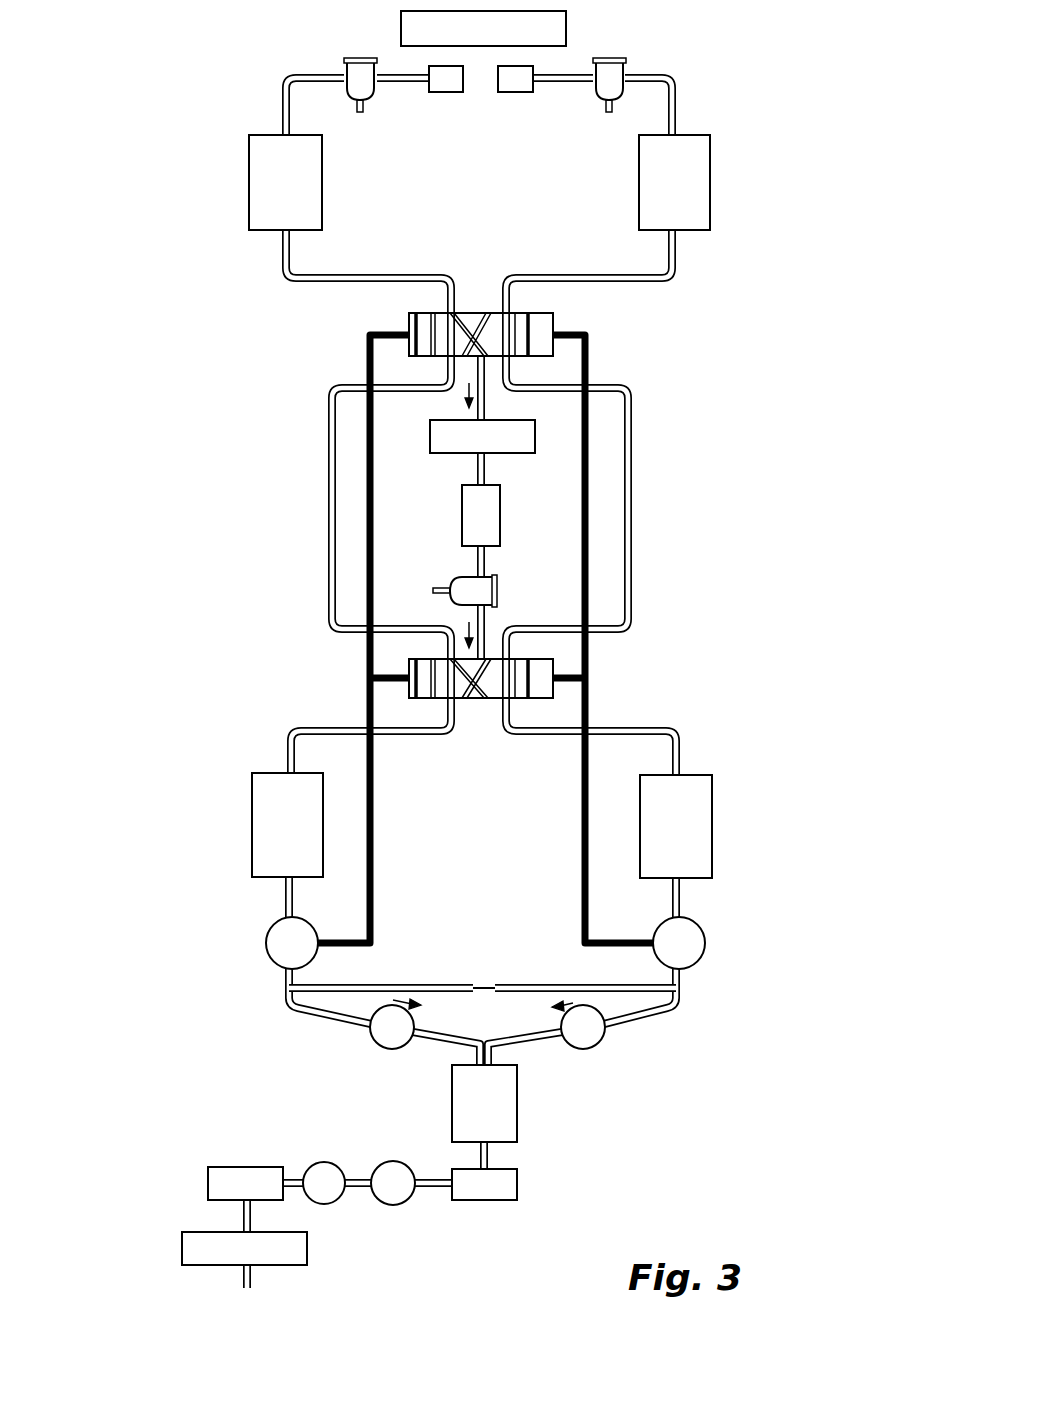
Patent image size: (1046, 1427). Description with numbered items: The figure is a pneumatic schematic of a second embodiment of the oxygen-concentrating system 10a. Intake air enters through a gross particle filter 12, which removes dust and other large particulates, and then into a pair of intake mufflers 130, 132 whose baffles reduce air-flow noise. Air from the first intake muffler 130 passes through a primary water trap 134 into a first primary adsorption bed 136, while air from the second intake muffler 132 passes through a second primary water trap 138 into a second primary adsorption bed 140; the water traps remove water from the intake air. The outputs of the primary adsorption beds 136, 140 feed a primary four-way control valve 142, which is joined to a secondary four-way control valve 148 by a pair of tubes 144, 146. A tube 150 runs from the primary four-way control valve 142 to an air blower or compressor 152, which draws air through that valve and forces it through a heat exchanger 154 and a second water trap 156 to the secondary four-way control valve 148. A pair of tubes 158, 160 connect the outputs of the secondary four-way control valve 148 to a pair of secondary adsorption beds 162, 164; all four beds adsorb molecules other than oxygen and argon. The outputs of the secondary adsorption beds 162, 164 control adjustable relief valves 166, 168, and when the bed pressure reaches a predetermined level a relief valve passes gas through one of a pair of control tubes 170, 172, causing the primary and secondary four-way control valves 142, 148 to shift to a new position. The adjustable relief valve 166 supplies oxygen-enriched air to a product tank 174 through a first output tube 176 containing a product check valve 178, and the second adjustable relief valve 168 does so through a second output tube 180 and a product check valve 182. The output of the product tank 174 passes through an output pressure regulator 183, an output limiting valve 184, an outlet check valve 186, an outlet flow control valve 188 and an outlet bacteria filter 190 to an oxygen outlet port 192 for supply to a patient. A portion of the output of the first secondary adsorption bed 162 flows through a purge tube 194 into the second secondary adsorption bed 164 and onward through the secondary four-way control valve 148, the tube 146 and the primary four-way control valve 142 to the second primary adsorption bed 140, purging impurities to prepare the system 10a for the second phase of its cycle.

The system 10a is at (693, 415).
The gross particle filter 12 is at (560, 30).
The first intake muffler 130 is at (442, 95).
The second intake muffler 132 is at (518, 95).
The primary water trap 134 is at (345, 63).
The first primary adsorption bed 136 is at (263, 170).
The second primary water trap 138 is at (617, 72).
The second primary adsorption bed 140 is at (697, 170).
The primary four-way control valve 142 is at (543, 318).
The tube 144 is at (328, 517).
The tube 146 is at (633, 490).
The secondary four-way control valve 148 is at (552, 693).
The tube 150 is at (487, 403).
The air blower or compressor 152 is at (433, 453).
The heat exchanger 154 is at (488, 510).
The second water trap 156 is at (485, 587).
The tube 158 is at (285, 740).
The tube 160 is at (680, 748).
The first secondary adsorption bed 162 is at (260, 822).
The second secondary adsorption bed 164 is at (702, 815).
The adjustable relief valve 166 is at (265, 953).
The second adjustable relief valve 168 is at (705, 950).
The control tube 170 is at (365, 653).
The control tube 172 is at (590, 657).
The product tank 174 is at (517, 1100).
The first output tube 176 is at (328, 1017).
The product check valve 178 is at (387, 1048).
The second output tube 180 is at (655, 1018).
The product check valve 182 is at (603, 1042).
The output pressure regulator 183 is at (517, 1185).
The output limiting valve 184 is at (407, 1200).
The outlet check valve 186 is at (337, 1202).
The outlet flow control valve 188 is at (240, 1177).
The outlet bacteria filter 190 is at (182, 1248).
The oxygen outlet port 192 is at (255, 1277).
The purge tube 194 is at (427, 985).